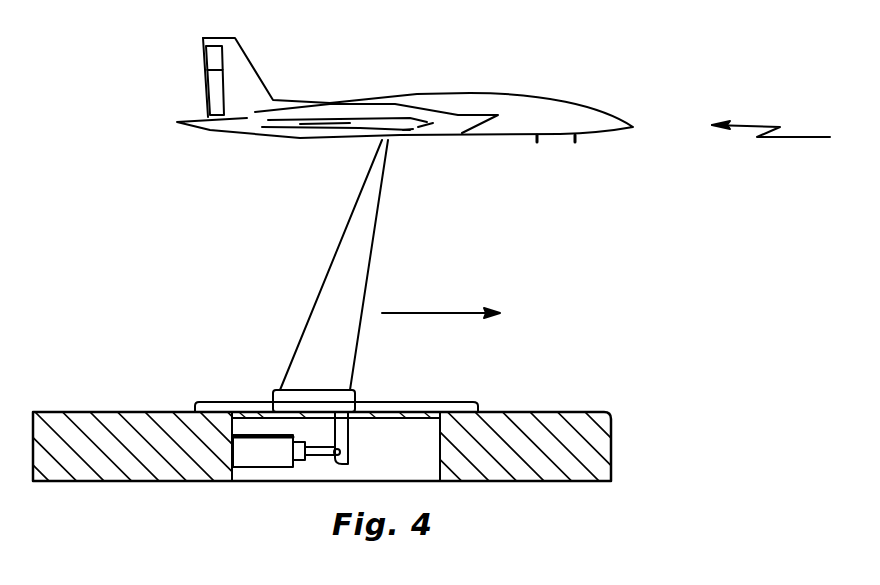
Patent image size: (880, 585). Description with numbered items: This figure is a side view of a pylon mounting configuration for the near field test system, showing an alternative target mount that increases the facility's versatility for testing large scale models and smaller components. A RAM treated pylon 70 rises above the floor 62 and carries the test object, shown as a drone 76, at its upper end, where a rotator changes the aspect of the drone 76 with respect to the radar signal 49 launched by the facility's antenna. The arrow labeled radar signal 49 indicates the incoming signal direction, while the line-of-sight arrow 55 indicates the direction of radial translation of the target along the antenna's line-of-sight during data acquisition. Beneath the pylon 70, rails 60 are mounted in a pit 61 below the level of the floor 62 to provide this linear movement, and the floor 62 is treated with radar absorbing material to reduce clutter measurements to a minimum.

The drone 76 is at (587, 118).
The radar signals 49 is at (763, 125).
The RAM treated pylon 70 is at (352, 262).
The line-of-sight arrow 55 is at (460, 312).
The rails 60 is at (430, 408).
The floor 62 is at (553, 428).
The pit 61 is at (391, 459).